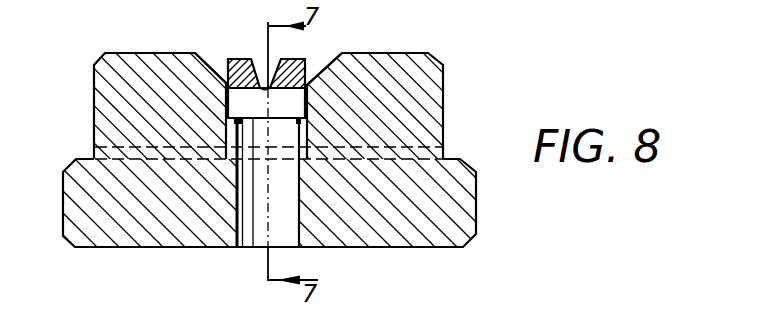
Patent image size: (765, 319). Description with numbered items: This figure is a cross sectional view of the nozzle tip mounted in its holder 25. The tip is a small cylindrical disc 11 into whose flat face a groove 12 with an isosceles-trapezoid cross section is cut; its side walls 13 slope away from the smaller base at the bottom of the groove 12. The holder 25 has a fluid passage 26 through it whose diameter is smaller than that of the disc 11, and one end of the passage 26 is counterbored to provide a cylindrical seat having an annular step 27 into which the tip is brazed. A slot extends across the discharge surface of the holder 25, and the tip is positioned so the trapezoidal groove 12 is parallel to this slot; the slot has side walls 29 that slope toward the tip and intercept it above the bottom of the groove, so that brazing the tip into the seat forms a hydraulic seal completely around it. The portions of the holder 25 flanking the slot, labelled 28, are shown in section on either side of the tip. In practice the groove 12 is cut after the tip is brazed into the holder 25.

The disc 11 is at (309, 62).
The groove 12 is at (273, 72).
The side walls 13 is at (264, 78).
The holder 25 is at (450, 158).
The fluid passage 26 is at (257, 248).
The annular step 27 is at (299, 125).
The clamping blocks 28 is at (130, 56).
The side walls 29 is at (205, 58).